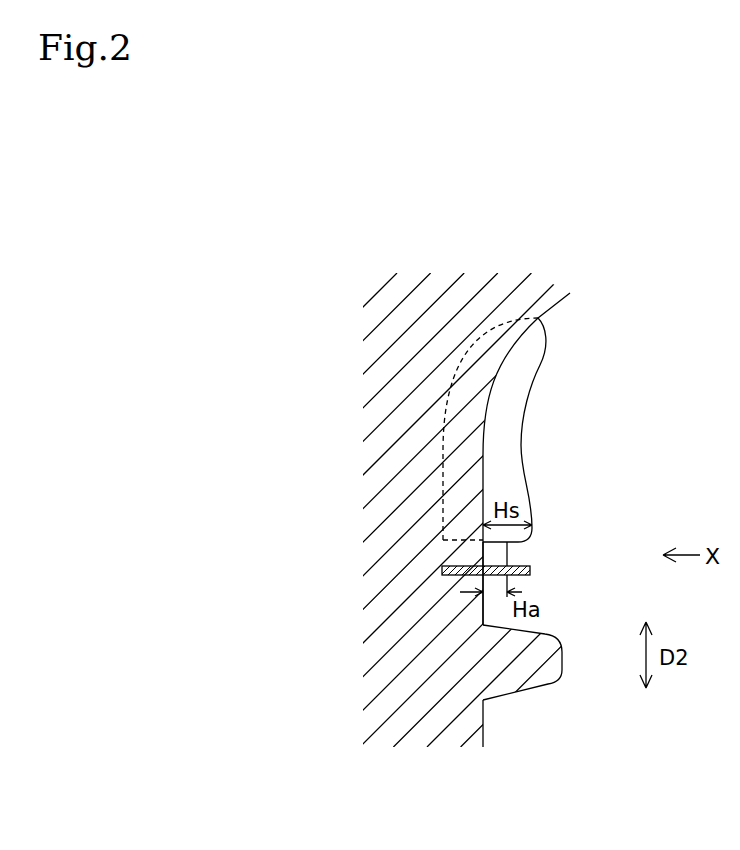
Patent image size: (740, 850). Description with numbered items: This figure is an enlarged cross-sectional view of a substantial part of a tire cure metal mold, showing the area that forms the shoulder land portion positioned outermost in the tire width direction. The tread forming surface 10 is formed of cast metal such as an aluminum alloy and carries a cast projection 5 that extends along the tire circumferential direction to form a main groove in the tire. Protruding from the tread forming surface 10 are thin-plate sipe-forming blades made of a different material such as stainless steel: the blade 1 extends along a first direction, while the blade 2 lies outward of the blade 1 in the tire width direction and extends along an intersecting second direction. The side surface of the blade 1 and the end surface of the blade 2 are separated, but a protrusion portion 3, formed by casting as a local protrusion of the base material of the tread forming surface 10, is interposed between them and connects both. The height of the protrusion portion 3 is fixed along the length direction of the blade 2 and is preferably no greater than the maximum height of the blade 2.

The blade 1 is at (531, 571).
The blade 2 is at (528, 402).
The protrusion portion 3 is at (508, 555).
The projection 5 is at (545, 685).
The tread forming surface 10 is at (484, 718).